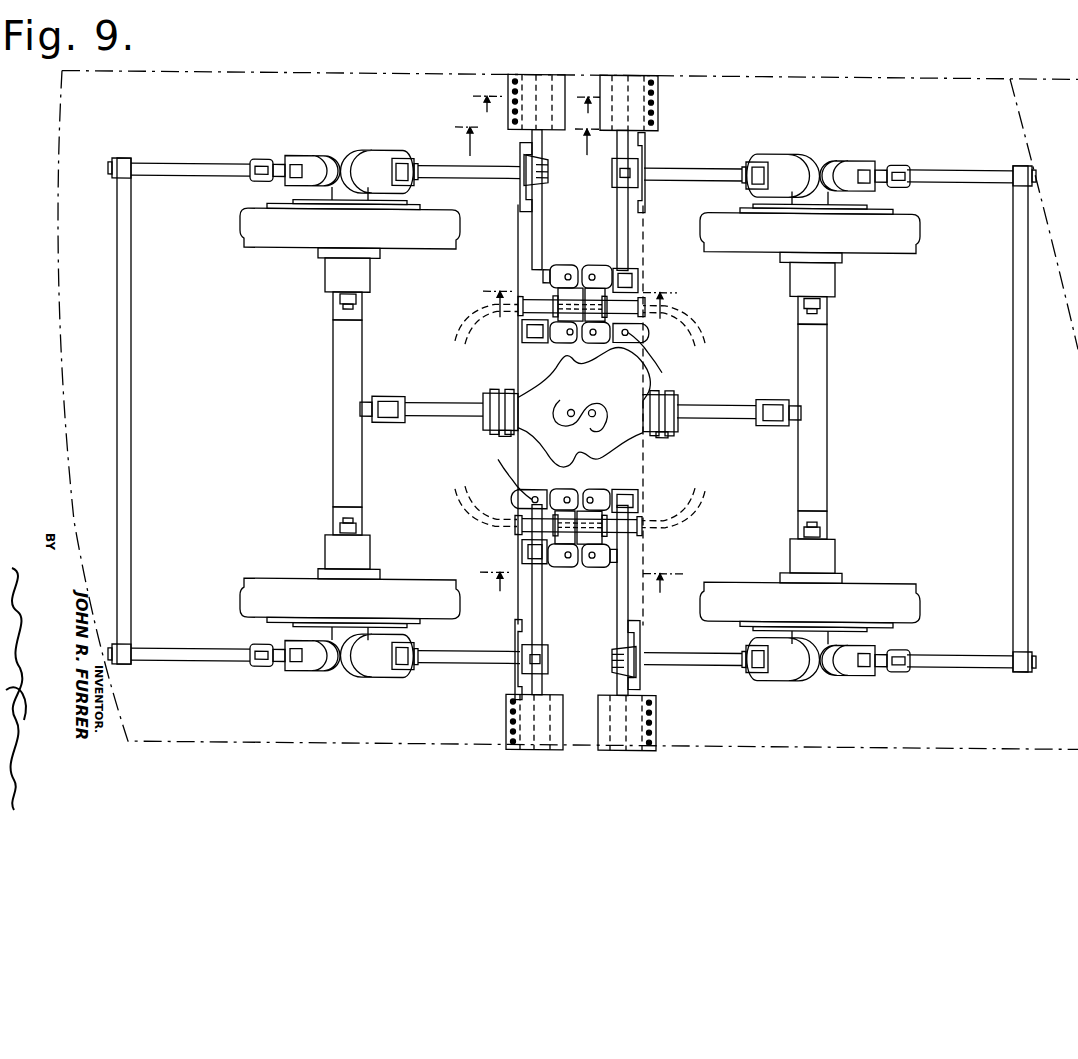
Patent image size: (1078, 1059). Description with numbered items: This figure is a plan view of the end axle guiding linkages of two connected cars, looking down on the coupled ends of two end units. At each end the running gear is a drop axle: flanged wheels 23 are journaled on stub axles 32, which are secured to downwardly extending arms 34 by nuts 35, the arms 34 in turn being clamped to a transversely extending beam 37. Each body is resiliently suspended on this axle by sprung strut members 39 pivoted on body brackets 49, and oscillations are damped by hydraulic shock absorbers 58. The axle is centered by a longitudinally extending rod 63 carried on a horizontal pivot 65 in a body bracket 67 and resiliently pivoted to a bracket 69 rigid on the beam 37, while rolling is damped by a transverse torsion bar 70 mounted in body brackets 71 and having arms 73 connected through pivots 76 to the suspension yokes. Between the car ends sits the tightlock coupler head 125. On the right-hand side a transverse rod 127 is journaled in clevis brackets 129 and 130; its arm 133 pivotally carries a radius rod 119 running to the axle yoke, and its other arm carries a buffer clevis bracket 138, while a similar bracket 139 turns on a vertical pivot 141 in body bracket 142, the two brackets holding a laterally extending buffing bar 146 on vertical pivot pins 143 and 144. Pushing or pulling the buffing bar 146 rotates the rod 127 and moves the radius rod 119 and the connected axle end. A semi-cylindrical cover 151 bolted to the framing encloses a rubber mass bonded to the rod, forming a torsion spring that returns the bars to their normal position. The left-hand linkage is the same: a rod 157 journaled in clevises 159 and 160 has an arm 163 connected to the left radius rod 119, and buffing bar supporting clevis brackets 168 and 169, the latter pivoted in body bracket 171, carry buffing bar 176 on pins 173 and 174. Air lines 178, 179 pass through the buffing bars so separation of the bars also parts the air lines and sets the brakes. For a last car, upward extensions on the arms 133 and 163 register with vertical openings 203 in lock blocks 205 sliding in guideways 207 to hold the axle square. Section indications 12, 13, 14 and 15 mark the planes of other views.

The section line 12 is at (581, 591).
The section line 13 / connecting rod 13 is at (583, 414).
The section line 14 is at (527, 147).
The section line 15 is at (536, 113).
The flanged wheels 23 is at (256, 230).
The stub axles 32 is at (330, 195).
The downwardly extending arms 34 is at (860, 554).
The nuts 35 is at (860, 518).
The transversely extending beam 37 is at (333, 480).
The resilient strut member 39 is at (382, 148).
The body bracket 49 is at (402, 162).
The hydraulic shock absorber 58 is at (318, 154).
The longitudinally extending rod 63 is at (440, 416).
The horizontal pivot 65 is at (504, 436).
The bracket 67 is at (486, 393).
The longitudinally extending bracket 69 is at (382, 423).
The torsion bar 70 is at (131, 392).
The body bracket 71 is at (124, 157).
The longitudinally extending arms 73 is at (976, 162).
The transverse horizontal pivot 76 is at (270, 158).
The radius rod 119 is at (434, 172).
The tightlock coupler head 125 is at (582, 413).
The transversely extending horizontal rod 127 is at (630, 218).
The clevis bracket 129 is at (614, 262).
The clevis bracket 130 is at (540, 676).
The downwardly extending arm 133 is at (540, 656).
The buffer clevis bracket 138 is at (604, 265).
The buffer clevis bracket 139 is at (600, 343).
The vertical pivot 141 is at (630, 340).
The bracket 142 is at (502, 498).
The vertical pivot pin 143 is at (634, 285).
The vertical pivot pin 144 is at (586, 360).
The buffing bar 146 is at (638, 285).
The semi-cylindrical metal cover 151 is at (556, 78).
The rod 157 is at (542, 214).
The clevis 159 is at (522, 343).
The clevis 160 is at (544, 160).
The downwardly extending arm 163 is at (548, 178).
The buffing bar supporting clevis bracket 168 is at (558, 343).
The buffing bar supporting clevis bracket 169 is at (560, 268).
The body bracket 171 is at (528, 266).
The vertical pivot pin 173 is at (580, 408).
The vertical pivot pin 174 is at (572, 358).
The buffing bar 176 is at (522, 290).
The air line 178 is at (700, 303).
The air line 179 is at (724, 498).
The vertical opening 203 is at (612, 172).
The lock block 205 is at (648, 150).
The guideway 207 is at (520, 150).